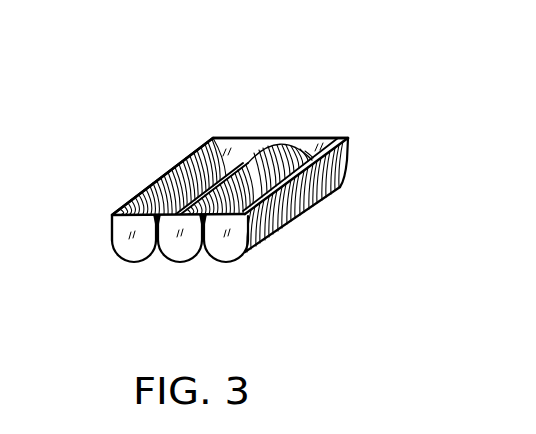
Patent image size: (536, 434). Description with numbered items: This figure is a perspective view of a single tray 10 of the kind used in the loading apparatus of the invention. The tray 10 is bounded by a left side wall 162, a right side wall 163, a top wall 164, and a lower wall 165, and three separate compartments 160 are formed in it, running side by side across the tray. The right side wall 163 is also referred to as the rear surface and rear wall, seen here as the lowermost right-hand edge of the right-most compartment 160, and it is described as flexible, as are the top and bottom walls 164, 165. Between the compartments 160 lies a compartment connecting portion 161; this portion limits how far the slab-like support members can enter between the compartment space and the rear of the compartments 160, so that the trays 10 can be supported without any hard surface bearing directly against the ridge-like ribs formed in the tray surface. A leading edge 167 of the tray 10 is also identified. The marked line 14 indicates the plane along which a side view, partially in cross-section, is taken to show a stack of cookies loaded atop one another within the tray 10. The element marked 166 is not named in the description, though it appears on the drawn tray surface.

The tray 10 is at (205, 85).
The line 14— 14 is at (390, 88).
The compartments 160 is at (133, 253).
The compartment connecting portion 161 is at (157, 243).
The left side wall 162 is at (165, 174).
The right side wall 163 is at (340, 178).
The top wall 164 is at (283, 137).
The lower wall 165 is at (125, 233).
The side surface 166 is at (303, 210).
The leading edge 167 is at (200, 148).